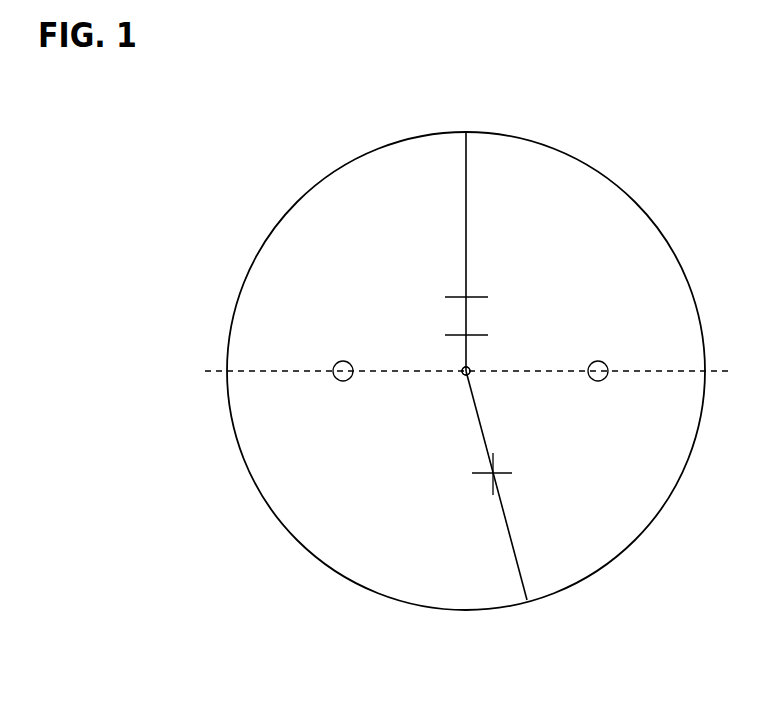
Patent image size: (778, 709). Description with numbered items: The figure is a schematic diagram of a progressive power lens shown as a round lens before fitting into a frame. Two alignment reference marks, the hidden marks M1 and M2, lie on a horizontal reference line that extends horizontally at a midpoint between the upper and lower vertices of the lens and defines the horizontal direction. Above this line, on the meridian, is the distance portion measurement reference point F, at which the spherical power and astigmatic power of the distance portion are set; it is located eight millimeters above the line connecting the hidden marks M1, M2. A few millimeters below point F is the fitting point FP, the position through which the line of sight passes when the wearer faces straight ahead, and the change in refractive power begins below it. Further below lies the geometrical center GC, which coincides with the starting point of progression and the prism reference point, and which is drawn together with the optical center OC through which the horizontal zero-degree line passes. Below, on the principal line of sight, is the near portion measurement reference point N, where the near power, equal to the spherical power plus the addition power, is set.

The hidden mark M1 is at (345, 351).
The hidden mark M2 is at (598, 352).
The distance portion measurement reference point F is at (464, 294).
The fitting point FP is at (464, 332).
The geometrical center GC is at (470, 374).
The optical center OC is at (507, 405).
The near portion measurement reference point N is at (487, 479).